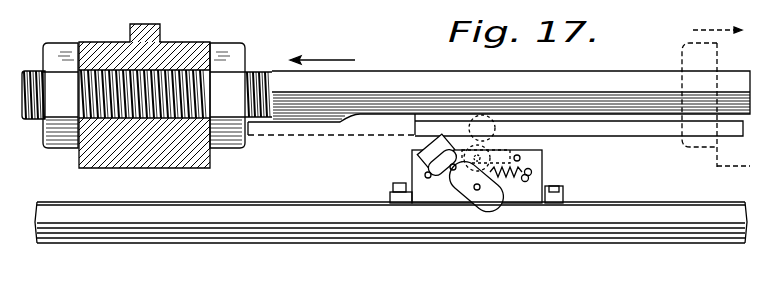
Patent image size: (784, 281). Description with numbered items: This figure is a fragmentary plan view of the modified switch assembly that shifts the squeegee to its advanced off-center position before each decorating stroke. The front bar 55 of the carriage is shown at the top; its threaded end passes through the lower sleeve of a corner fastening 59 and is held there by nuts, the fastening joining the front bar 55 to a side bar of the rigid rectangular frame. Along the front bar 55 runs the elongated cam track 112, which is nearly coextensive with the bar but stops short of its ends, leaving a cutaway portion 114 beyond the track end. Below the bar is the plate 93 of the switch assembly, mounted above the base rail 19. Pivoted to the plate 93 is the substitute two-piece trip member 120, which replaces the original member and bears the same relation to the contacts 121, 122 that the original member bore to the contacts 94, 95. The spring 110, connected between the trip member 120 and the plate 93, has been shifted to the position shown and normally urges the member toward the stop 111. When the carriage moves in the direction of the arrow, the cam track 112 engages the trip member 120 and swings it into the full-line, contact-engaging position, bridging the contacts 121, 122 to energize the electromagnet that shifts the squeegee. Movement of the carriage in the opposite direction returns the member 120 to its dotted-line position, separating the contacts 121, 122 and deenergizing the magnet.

The base rail 19 is at (632, 231).
The front bar 55 is at (583, 81).
The corner fastening 59 is at (175, 47).
The plate 93 is at (521, 197).
The contact 94 is at (519, 155).
The contact 95 is at (378, 10).
The spring 110 is at (530, 168).
The stop 111 is at (532, 179).
The cam track 112 is at (638, 128).
The cutaway portion 114 is at (381, 119).
The two-piece trip member 120 is at (415, 143).
The contact 121 is at (440, 159).
The contact 122 is at (413, 172).